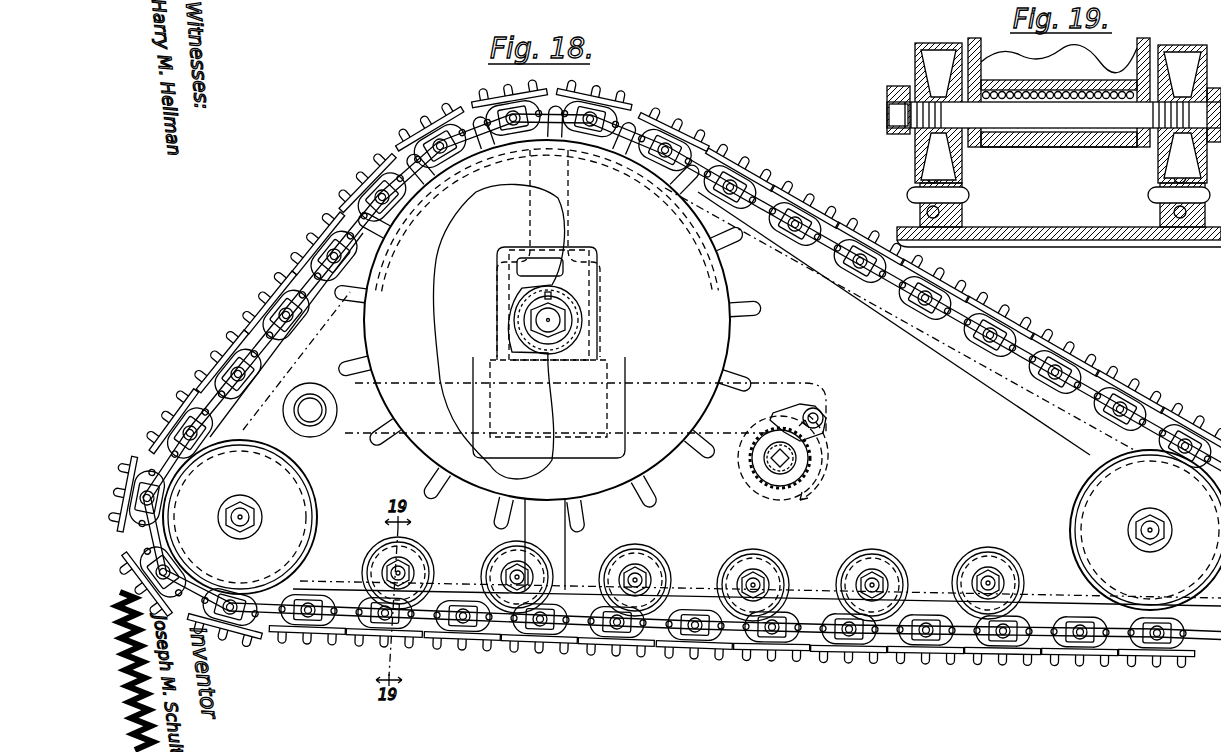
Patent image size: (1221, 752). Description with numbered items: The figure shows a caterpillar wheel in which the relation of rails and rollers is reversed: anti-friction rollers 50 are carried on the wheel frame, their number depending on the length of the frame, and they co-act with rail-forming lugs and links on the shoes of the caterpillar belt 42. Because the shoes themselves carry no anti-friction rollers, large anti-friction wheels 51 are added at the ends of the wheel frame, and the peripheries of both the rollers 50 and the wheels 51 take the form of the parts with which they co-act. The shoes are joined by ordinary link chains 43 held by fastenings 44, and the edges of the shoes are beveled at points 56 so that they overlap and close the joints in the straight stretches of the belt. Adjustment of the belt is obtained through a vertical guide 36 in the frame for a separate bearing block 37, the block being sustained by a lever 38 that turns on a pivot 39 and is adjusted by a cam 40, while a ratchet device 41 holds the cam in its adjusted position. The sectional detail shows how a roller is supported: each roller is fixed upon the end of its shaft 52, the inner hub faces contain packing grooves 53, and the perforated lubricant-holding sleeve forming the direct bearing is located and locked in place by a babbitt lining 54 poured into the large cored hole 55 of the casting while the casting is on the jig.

In FIG. 18, the vertical guide 36 is at (526, 268).
In FIG. 18, the bearing block 37 is at (520, 296).
In FIG. 18, the lever 38 is at (503, 374).
In FIG. 18, the pivot 39 is at (308, 412).
In FIG. 18, the cam 40 is at (815, 458).
In FIG. 18, the ratchet device 41 is at (762, 472).
In FIG. 18, the anti-friction rollers 50 is at (622, 566).
In FIG. 18, the large anti-friction wheels 51 is at (300, 510).
In FIG. 18, the beveled shoe edges 56 is at (596, 650).
In FIG. 19, the caterpillar belt 42 is at (1059, 229).
In FIG. 19, the link chains 43 is at (962, 213).
In FIG. 19, the fastenings 44 is at (925, 205).
In FIG. 19, the shafts 52 is at (893, 113).
In FIG. 19, the packing grooves 53 is at (1045, 86).
In FIG. 19, the babbitt lining 54 is at (1002, 90).
In FIG. 19, the cored hole 55 is at (1122, 140).